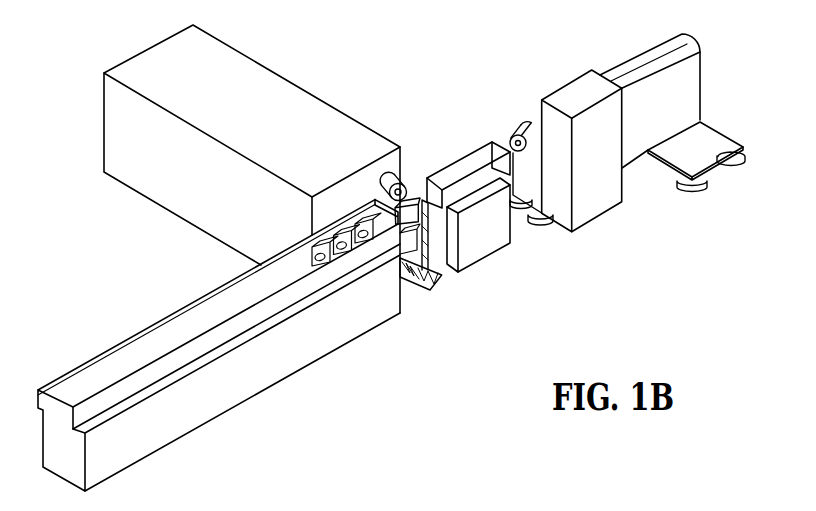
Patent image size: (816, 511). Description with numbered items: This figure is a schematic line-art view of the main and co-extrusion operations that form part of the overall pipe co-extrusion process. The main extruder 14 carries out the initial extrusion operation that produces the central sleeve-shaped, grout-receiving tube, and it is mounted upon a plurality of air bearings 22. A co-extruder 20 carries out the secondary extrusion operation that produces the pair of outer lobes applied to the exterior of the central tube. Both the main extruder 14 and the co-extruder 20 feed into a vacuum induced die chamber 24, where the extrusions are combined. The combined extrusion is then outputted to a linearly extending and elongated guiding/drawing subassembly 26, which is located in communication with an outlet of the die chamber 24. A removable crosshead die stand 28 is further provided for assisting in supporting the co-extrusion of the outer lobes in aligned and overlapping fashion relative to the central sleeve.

The main extruder 14 is at (660, 58).
The co-extruder 20 is at (287, 98).
The air bearings 22 is at (722, 162).
The vacuum induced die chamber 24 is at (468, 158).
The guiding/drawing subassembly 26 is at (288, 363).
The removable crosshead die stand 28 is at (433, 281).